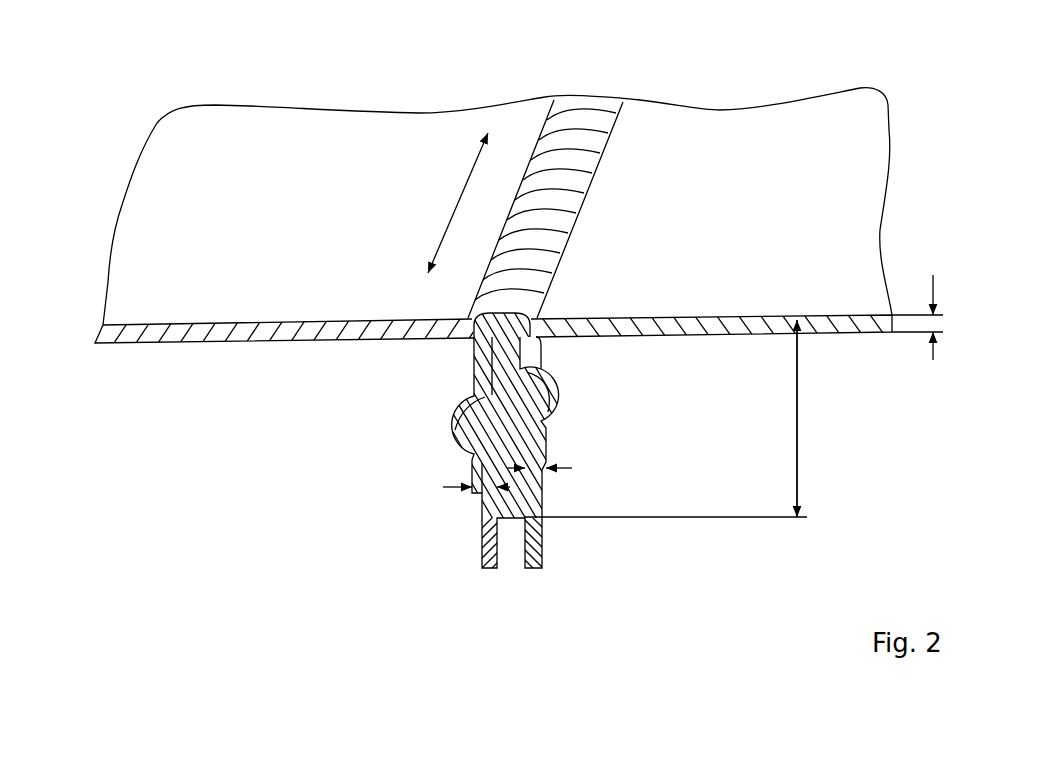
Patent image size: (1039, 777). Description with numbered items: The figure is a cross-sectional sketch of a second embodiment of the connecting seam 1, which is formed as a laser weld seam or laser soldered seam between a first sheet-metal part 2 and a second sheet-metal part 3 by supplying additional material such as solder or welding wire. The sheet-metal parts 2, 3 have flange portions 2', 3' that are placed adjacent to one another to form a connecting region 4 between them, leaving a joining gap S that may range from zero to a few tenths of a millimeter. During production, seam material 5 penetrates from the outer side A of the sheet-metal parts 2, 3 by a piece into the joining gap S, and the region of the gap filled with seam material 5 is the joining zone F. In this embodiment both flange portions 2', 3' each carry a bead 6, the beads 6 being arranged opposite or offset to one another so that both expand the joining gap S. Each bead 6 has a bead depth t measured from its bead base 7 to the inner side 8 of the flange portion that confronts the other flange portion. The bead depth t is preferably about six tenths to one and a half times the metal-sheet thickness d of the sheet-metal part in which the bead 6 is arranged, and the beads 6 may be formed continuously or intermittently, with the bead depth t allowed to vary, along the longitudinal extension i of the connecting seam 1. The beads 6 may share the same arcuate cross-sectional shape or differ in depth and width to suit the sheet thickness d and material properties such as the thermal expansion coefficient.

The connecting seam 1 is at (585, 122).
The first sheet-metal part 2 is at (320, 183).
The second sheet-metal part 3 is at (720, 170).
The flange portion of the first sheet-metal part 2' is at (478, 556).
The flange portion of the second sheet-metal part 3' is at (551, 547).
The connecting region 4 is at (452, 475).
The seam material 5 is at (510, 374).
The bead 6 is at (455, 426).
The bead base 7 is at (468, 398).
The inner side of the flange portion 8 is at (527, 547).
The outer side A is at (362, 137).
The joining gap S is at (508, 543).
The metal-sheet thickness d is at (942, 322).
The joining zone F is at (800, 425).
The longitudinal extension i is at (457, 210).
The bead depth t is at (545, 472).